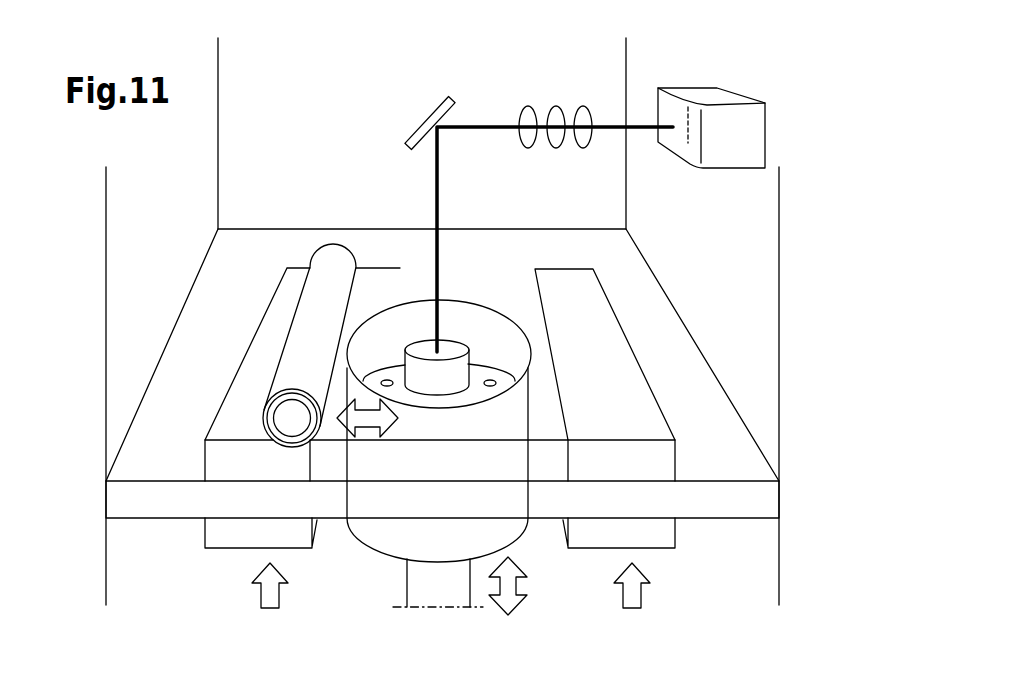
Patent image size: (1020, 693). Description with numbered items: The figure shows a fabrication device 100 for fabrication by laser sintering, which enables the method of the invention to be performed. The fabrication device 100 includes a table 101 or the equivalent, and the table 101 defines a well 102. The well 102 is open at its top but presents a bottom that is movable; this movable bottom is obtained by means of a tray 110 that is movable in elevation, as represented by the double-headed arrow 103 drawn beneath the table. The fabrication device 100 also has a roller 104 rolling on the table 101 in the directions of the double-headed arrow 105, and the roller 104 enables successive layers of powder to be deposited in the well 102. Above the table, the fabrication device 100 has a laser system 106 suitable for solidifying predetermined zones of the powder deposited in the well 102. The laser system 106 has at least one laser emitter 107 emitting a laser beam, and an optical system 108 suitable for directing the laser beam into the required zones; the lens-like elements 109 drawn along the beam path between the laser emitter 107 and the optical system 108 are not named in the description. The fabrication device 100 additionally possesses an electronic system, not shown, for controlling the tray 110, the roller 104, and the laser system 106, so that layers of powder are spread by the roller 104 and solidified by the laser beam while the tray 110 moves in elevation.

The fabrication device 100 is at (737, 388).
The table 101 is at (663, 342).
The well 102 is at (497, 350).
The double-headed arrow 103 is at (527, 586).
The roller 104 is at (290, 365).
The double-headed arrow 105 is at (370, 428).
The laser system 106 is at (640, 179).
The laser emitter 107 is at (765, 120).
The optical system 108 is at (435, 98).
The condensing lens 109 is at (603, 120).
The tray 110 is at (383, 325).